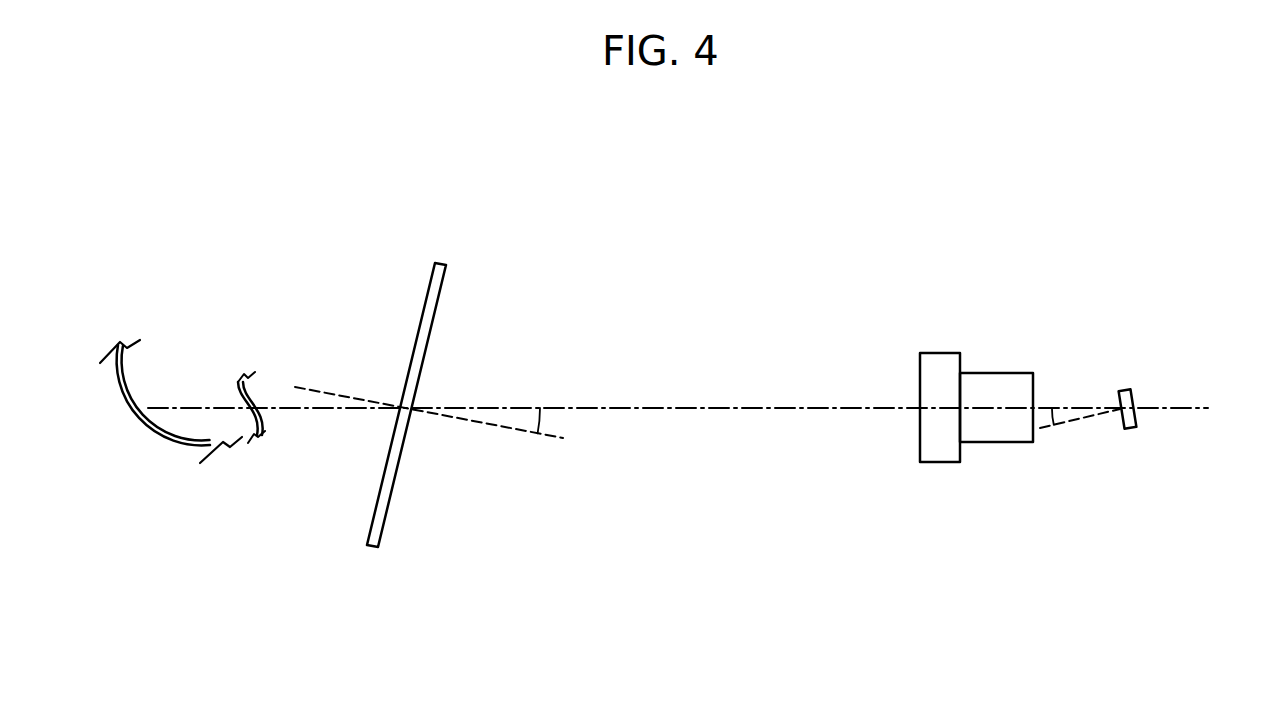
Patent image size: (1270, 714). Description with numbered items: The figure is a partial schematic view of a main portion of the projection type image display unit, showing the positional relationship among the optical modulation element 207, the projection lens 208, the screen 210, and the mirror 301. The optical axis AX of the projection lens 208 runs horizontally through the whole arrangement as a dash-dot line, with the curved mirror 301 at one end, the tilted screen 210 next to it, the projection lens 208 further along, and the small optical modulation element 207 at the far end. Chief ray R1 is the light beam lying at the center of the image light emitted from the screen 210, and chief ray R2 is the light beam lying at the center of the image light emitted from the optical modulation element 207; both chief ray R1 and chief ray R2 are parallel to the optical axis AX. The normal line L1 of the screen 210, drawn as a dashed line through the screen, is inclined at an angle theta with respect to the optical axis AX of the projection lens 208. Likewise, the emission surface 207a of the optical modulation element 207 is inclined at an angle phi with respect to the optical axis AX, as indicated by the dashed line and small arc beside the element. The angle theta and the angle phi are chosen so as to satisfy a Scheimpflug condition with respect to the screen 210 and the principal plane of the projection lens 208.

The mirror 301 is at (168, 440).
The screen 210 is at (437, 263).
The projection lens 208 is at (942, 353).
The optical modulation element 207 is at (1132, 388).
The emission surface 207a is at (1120, 410).
The chief ray R1 is at (318, 407).
The chief ray R2 is at (830, 407).
The normal line L1 is at (500, 425).
The optical axis AX is at (702, 409).